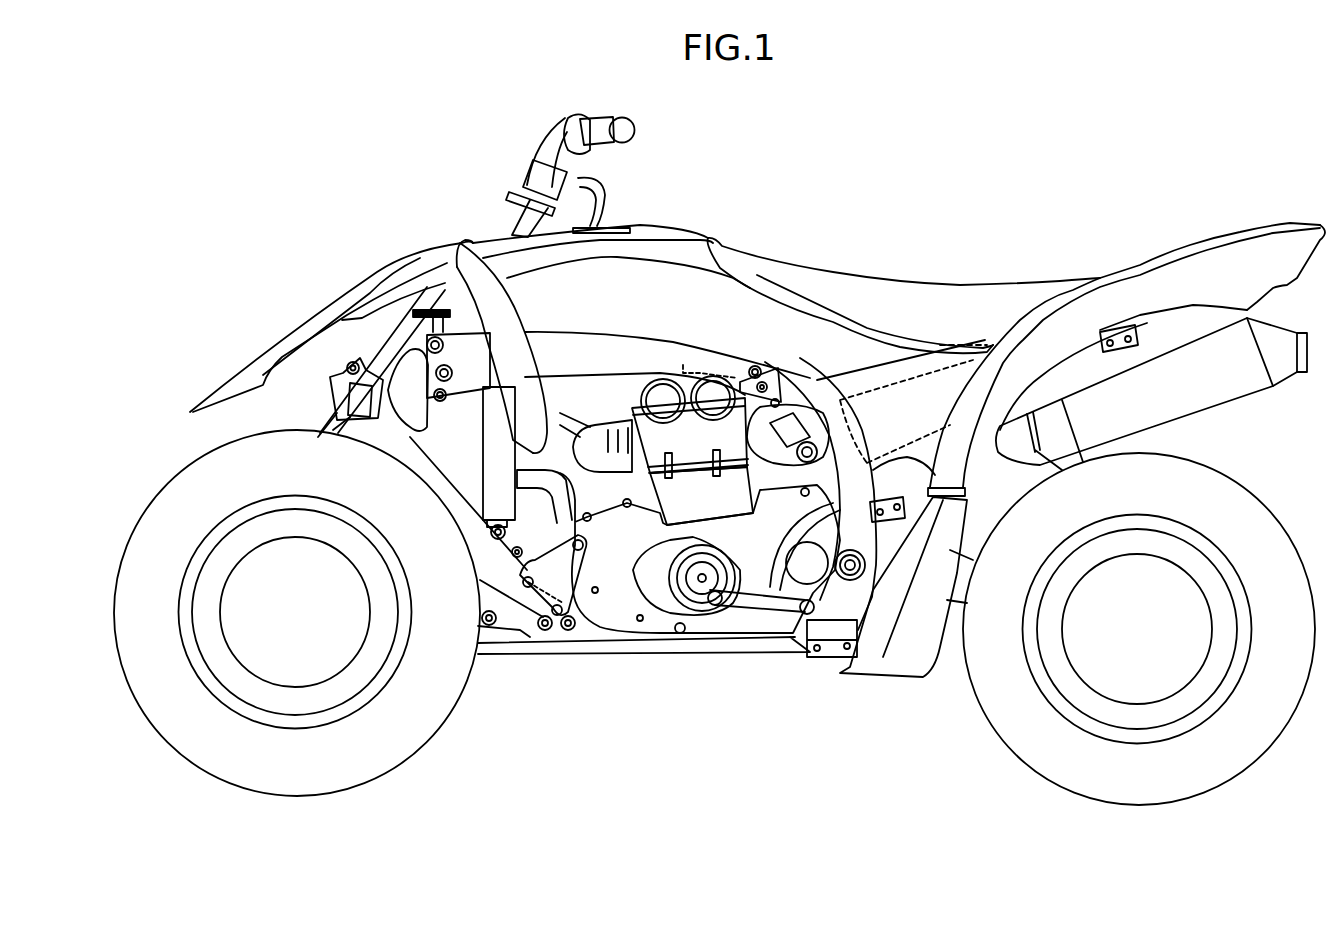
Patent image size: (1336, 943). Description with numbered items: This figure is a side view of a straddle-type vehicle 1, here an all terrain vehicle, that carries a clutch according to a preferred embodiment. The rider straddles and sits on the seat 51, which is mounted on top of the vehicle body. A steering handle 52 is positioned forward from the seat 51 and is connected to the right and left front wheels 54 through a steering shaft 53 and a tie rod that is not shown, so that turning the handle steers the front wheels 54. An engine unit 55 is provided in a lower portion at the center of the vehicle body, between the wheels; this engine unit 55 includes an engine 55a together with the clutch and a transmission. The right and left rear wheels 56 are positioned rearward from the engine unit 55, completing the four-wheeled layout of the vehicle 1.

The straddle-type vehicle 1 is at (894, 157).
The seat 51 is at (960, 282).
The steering handle 52 is at (552, 142).
The steering shaft 53 is at (507, 237).
The front wheels 54 is at (430, 720).
The engine unit 55 is at (627, 633).
The engine 55a is at (703, 500).
The rear wheels 56 is at (1258, 740).